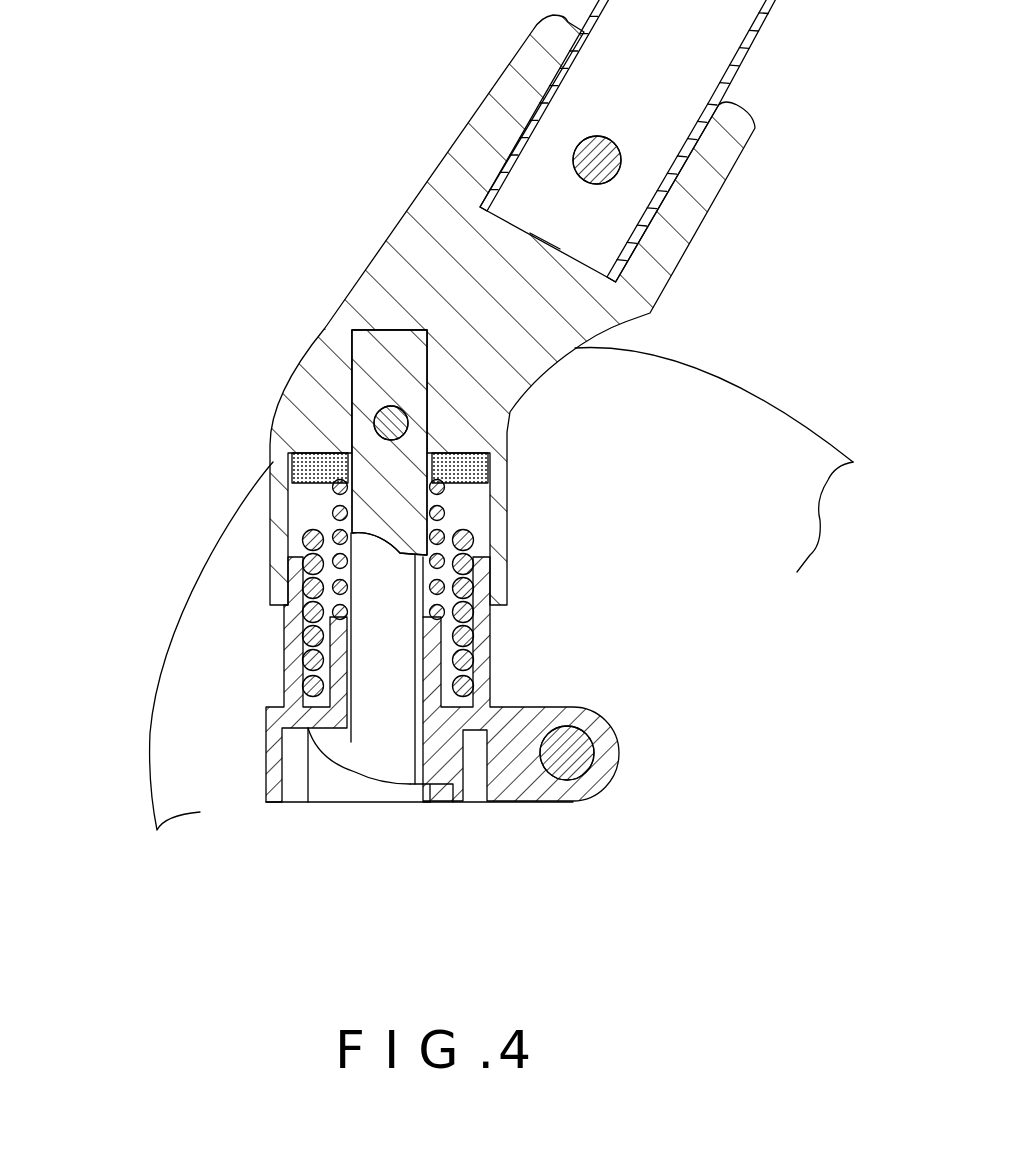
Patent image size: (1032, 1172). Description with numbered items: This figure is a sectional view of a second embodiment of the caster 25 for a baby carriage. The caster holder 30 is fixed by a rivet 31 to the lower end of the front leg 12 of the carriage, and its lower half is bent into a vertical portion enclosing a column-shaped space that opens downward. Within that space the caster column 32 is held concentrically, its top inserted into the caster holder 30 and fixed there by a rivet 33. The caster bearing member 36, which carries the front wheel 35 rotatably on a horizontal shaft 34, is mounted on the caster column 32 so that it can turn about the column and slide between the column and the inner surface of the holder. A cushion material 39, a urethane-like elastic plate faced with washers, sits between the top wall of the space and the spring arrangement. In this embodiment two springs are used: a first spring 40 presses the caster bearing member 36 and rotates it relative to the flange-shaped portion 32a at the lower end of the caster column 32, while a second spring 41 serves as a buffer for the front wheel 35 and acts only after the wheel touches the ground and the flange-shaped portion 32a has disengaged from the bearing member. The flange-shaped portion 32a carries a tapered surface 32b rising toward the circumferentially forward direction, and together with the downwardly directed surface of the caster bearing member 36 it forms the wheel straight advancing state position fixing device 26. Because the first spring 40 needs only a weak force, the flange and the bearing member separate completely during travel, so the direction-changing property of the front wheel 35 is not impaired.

The tubular frame member 12 is at (762, 50).
The seat post / clamp assembly 25 is at (265, 319).
The wheel straight advancing state position fixing device 26 is at (432, 806).
The caster holder 30 is at (380, 252).
The rivet 31 is at (610, 166).
The caster column 32 is at (405, 578).
The flange-shaped portion 32a is at (363, 790).
The tapered surface 32b is at (335, 745).
The rivet 33 is at (375, 420).
The horizontal shaft 34 is at (614, 728).
The front wheel 35 is at (765, 398).
The caster bearing member 36 is at (515, 808).
The cushion material 39 is at (490, 467).
The first spring 40 is at (300, 496).
The second spring 41 is at (287, 592).